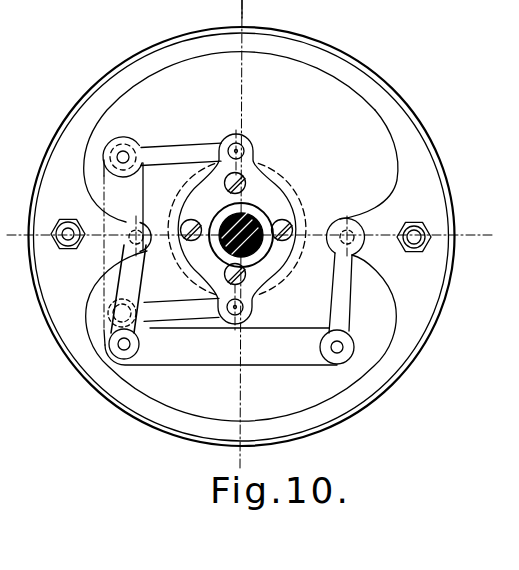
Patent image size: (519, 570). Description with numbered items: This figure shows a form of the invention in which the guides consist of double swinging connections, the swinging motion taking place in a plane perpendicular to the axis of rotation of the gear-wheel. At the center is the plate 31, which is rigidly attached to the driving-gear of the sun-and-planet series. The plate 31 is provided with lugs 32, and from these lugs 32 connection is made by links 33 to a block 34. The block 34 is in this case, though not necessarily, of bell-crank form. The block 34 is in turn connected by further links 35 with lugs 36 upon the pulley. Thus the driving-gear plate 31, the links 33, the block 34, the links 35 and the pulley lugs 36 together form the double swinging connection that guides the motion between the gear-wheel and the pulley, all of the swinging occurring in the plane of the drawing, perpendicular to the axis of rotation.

The plate 31 is at (237, 229).
The lugs 32 is at (252, 143).
The links 33 is at (181, 232).
The block 34 is at (228, 251).
The links 35 is at (232, 289).
The lugs 36 is at (240, 234).